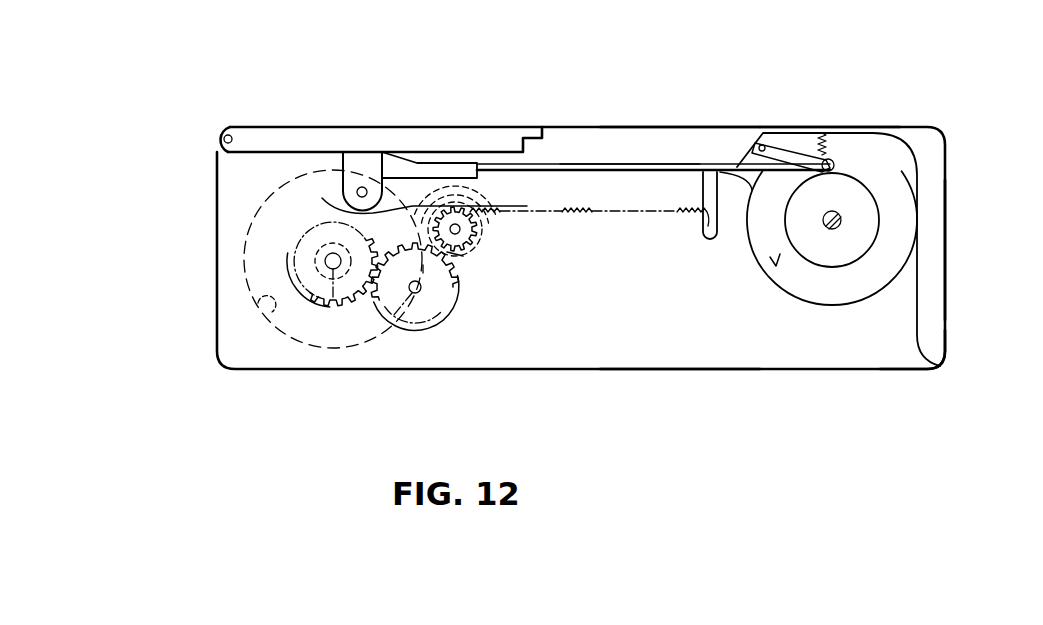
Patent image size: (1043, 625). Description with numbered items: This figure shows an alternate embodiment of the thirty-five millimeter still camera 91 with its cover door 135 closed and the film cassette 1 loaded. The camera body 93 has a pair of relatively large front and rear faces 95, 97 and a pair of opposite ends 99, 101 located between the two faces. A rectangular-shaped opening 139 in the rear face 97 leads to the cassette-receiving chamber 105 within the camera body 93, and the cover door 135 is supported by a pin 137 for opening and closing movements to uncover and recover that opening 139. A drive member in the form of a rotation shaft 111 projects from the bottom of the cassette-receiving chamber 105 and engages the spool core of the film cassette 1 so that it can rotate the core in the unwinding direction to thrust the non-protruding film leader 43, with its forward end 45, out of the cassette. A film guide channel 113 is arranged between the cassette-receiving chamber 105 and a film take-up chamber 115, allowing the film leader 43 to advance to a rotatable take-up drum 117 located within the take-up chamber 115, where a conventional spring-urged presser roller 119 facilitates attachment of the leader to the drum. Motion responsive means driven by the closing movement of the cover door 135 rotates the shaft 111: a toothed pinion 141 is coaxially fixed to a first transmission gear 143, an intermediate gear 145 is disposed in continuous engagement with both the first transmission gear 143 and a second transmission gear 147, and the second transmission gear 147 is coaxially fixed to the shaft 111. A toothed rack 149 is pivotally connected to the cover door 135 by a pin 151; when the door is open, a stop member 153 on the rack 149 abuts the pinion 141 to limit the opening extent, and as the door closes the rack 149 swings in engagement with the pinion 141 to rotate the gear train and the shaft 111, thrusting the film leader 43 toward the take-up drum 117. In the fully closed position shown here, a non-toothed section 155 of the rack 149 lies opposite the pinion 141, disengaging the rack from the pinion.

The film cassette 1 is at (273, 268).
The film leader 43 is at (623, 167).
The forward end 45 is at (820, 173).
The still camera 91 is at (788, 121).
The camera body 93 is at (947, 367).
The front face 95 is at (673, 370).
The rear face 97 is at (683, 127).
The opposite end 99 is at (948, 195).
The opposite end 101 is at (217, 200).
The cassette-receiving chamber 105 is at (260, 303).
The rotation shaft 111 is at (326, 303).
The film guide channel 113 is at (567, 165).
The film take-up chamber 115 is at (793, 280).
The take-up drum 117 is at (810, 245).
The presser roller 119 is at (835, 165).
The cover door 135 is at (407, 127).
The pin 137 is at (228, 128).
The rectangular-shaped opening 139 is at (533, 127).
The toothed pinion 141 is at (470, 233).
The first transmission gear 143 is at (462, 255).
The intermediate gear 145 is at (438, 278).
The second transmission gear 147 is at (325, 229).
The toothed rack 149 is at (503, 212).
The pin 151 is at (362, 187).
The stop member 153 is at (703, 238).
The non-toothed section 155 is at (413, 196).